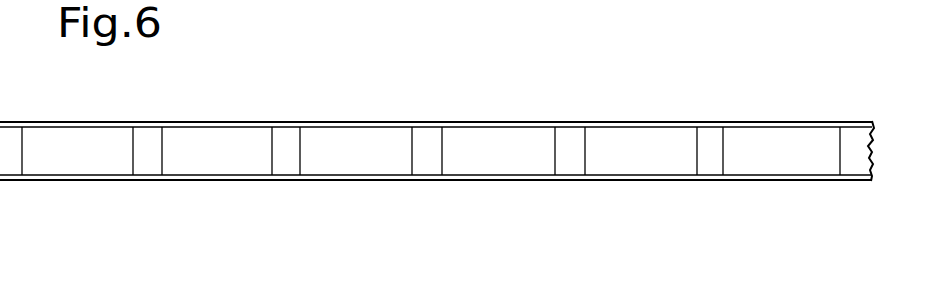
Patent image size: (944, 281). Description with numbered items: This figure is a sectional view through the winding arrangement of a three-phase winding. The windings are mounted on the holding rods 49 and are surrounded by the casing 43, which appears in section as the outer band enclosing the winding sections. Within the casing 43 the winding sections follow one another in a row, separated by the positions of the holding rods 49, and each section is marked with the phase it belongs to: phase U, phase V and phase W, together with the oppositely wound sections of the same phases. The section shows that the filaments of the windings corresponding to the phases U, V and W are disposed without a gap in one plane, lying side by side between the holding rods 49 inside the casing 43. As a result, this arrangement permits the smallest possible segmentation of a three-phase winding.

The casing 43 is at (460, 122).
The holding rods 49 is at (147, 162).
The phase u U is at (288, 151).
The phase v V is at (429, 151).
The phase w W is at (570, 151).